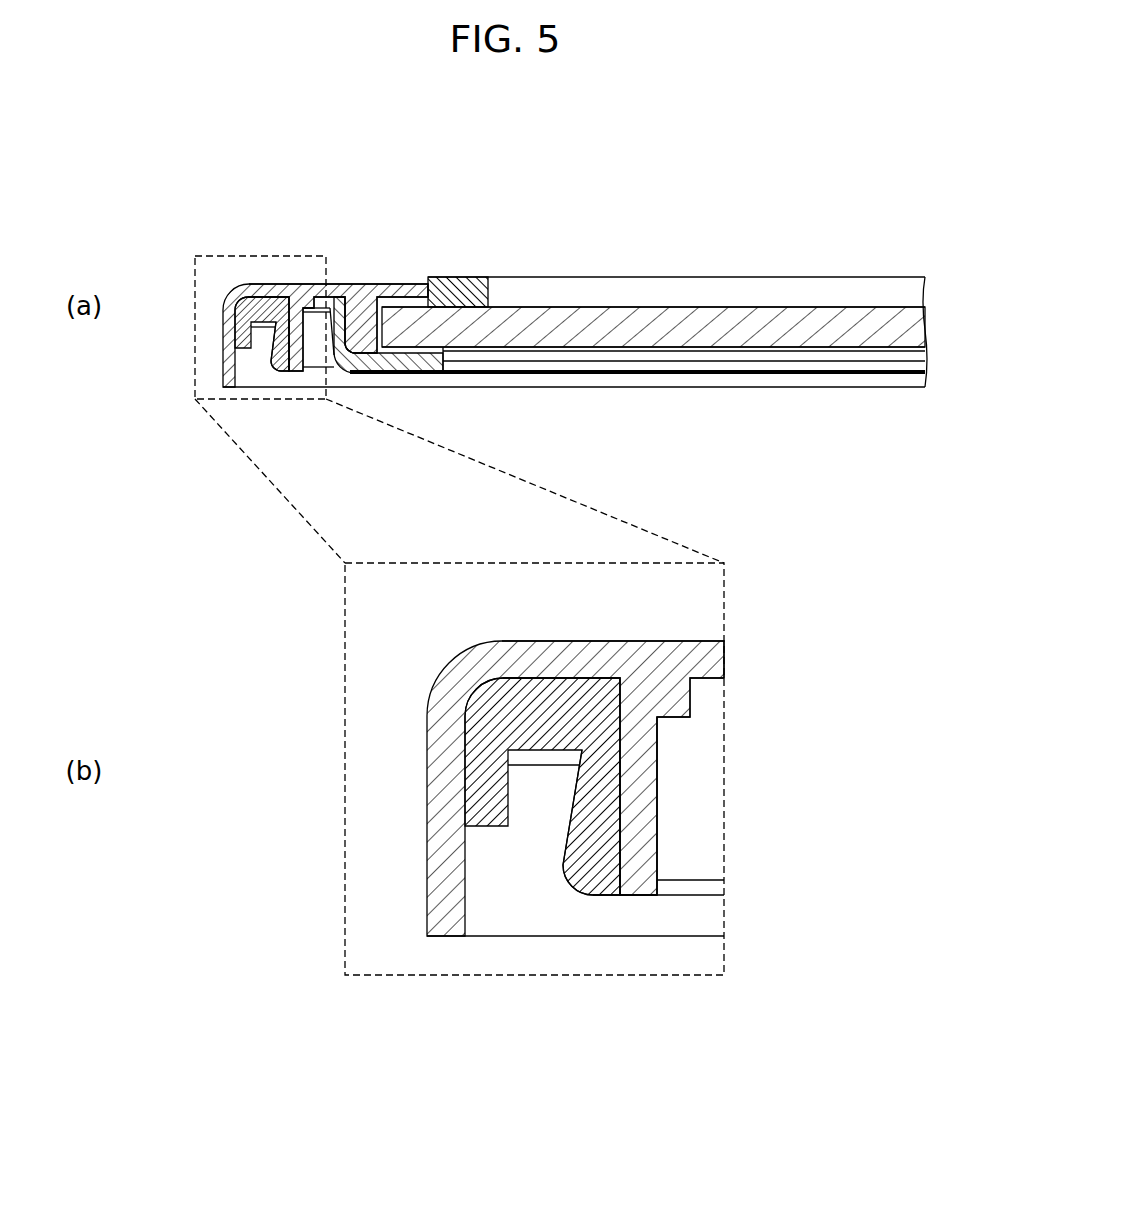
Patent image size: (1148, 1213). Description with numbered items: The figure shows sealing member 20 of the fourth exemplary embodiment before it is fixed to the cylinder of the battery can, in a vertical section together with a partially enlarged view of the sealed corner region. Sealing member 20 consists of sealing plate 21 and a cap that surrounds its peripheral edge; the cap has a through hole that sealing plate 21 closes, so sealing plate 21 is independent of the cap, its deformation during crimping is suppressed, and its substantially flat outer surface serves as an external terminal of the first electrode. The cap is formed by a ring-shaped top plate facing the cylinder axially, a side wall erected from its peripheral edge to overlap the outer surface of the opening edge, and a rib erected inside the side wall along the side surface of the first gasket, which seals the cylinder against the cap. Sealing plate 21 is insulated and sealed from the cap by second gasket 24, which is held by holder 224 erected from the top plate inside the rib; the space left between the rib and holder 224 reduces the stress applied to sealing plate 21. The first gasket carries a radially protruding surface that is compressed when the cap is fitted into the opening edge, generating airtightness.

The sealing member 20 is at (766, 197).
The sealing plate 21 is at (608, 322).
The second gasket 24 is at (467, 288).
The holder 224 is at (340, 318).